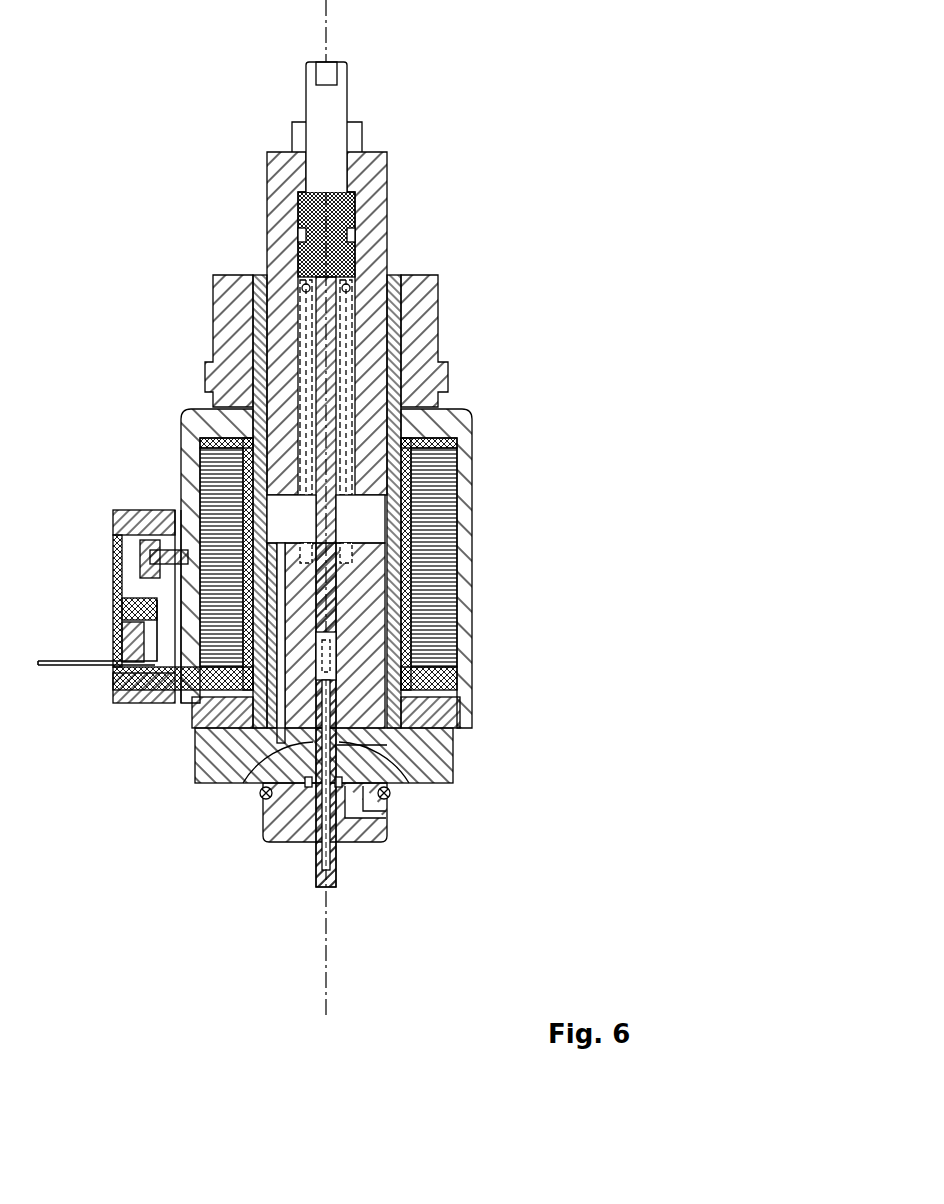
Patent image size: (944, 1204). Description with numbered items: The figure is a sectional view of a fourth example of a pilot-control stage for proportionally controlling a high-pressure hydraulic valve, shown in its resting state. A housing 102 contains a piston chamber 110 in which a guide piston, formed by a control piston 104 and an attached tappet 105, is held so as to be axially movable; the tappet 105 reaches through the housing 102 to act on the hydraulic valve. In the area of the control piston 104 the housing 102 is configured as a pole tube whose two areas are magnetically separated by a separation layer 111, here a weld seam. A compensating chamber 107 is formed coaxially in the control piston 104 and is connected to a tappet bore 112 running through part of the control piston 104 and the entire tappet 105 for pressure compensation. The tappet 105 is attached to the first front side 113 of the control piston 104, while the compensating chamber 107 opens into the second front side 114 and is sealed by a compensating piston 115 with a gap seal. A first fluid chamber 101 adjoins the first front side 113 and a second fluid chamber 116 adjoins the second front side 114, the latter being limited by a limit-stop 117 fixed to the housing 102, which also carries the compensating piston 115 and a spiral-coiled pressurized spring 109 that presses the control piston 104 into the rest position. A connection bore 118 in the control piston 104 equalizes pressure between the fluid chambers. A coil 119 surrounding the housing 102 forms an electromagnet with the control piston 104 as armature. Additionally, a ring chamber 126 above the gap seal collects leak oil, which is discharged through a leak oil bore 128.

The first fluid chamber 101 is at (262, 784).
The housing 102 is at (198, 752).
The control piston 104 is at (372, 742).
The tappet 105 is at (312, 860).
The compensating chamber 107 is at (334, 652).
The pressurized spring 109 is at (348, 288).
The piston chamber 110 is at (278, 512).
The separation layer 111 is at (420, 560).
The tappet bore 112 is at (338, 862).
The first front side 113 is at (392, 768).
The second front side 114 is at (372, 546).
The compensating piston 115 is at (320, 342).
The second fluid chamber 116 is at (378, 510).
The limit-stop 117 is at (372, 198).
The connection bore 118 is at (266, 712).
The coil 119 is at (200, 520).
The ring chamber 126 is at (296, 800).
The leak oil bore 128 is at (388, 832).